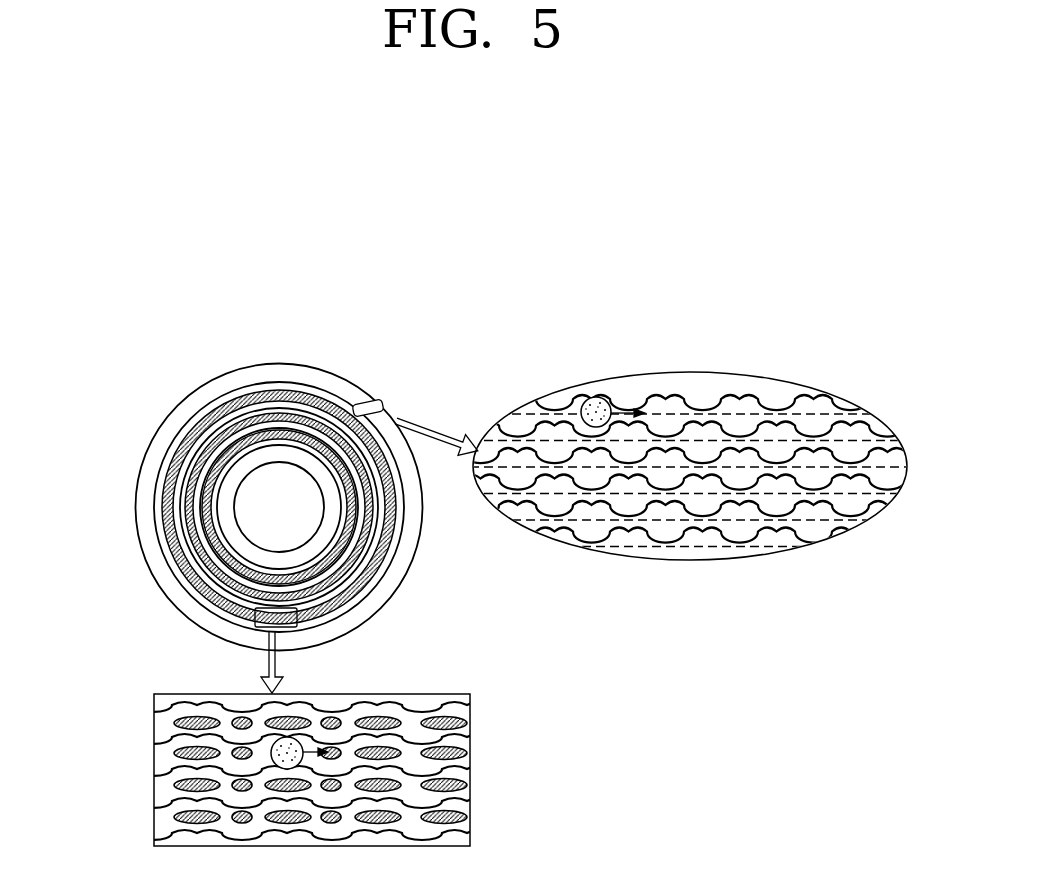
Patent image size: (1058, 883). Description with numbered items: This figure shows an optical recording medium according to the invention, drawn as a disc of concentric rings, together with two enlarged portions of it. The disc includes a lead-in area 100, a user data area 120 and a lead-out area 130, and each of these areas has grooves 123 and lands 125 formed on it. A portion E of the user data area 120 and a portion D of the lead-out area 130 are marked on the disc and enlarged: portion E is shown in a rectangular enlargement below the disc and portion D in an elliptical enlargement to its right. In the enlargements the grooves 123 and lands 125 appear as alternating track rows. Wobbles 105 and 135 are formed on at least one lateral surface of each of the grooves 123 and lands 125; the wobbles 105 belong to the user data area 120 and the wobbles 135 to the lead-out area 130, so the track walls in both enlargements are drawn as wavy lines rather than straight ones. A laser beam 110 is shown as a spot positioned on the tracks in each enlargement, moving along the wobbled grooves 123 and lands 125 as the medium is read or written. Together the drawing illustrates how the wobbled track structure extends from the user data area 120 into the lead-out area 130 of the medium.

The lead-in area 100 is at (281, 447).
The wobbles 105 is at (398, 705).
The laser beam 110 is at (596, 397).
The user data area 120 is at (148, 496).
The grooves 123 is at (878, 420).
The lands 125 is at (890, 446).
The lead-out area 130 is at (238, 378).
The wobbles 135 is at (735, 398).
The portion D of the lead-out area D is at (380, 403).
The portion E of the user data area E is at (248, 630).